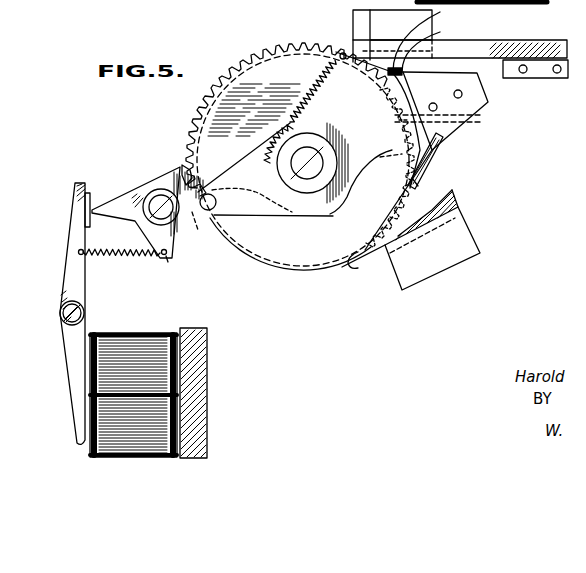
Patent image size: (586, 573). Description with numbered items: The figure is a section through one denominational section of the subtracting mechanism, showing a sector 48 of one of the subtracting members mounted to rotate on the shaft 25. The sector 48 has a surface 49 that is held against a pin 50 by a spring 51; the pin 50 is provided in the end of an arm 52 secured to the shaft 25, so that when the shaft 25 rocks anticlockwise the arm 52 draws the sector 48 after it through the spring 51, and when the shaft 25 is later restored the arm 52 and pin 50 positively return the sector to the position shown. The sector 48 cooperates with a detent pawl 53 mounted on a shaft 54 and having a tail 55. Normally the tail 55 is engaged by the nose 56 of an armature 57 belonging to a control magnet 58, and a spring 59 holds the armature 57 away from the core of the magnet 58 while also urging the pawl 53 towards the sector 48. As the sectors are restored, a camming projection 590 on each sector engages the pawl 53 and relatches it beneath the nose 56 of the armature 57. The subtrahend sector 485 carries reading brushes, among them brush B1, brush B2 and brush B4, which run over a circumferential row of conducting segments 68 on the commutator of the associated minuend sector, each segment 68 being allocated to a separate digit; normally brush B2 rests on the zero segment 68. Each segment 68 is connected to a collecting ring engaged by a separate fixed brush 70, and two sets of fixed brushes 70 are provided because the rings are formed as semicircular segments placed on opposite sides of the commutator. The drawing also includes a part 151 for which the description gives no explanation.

The sector 48 is at (252, 62).
The spring 51 is at (310, 89).
The shaft 25 is at (311, 172).
The arm 52 is at (238, 205).
The pin 50 is at (212, 207).
The surface 49 is at (203, 213).
The fixed brush 70 is at (318, 50).
The reading brush B1 is at (428, 38).
The reading brush B2 is at (480, 164).
The reading brush B4 is at (420, 180).
The conducting segment 68 is at (470, 116).
The subtrahend sector 485 is at (427, 142).
The nose 56 is at (85, 203).
The armature 57 is at (80, 290).
The tail 55 is at (95, 207).
The detent pawl 53 is at (178, 170).
The shaft 54 is at (158, 197).
The camming projection 590 is at (183, 164).
The spring 59 is at (90, 256).
The link 151 is at (181, 268).
The control magnet 58 is at (135, 340).